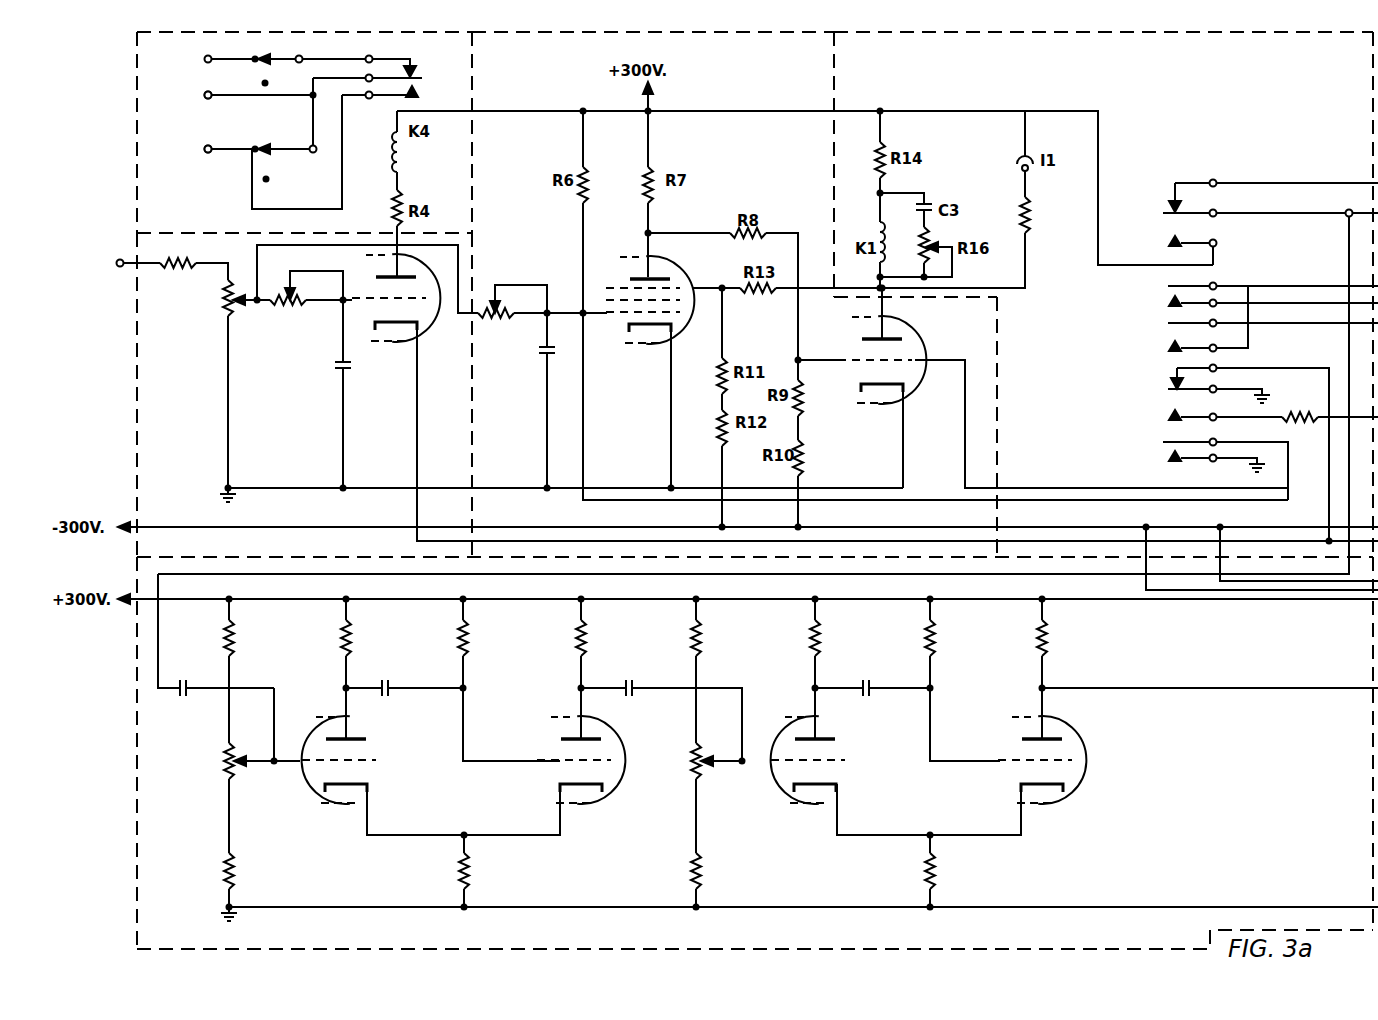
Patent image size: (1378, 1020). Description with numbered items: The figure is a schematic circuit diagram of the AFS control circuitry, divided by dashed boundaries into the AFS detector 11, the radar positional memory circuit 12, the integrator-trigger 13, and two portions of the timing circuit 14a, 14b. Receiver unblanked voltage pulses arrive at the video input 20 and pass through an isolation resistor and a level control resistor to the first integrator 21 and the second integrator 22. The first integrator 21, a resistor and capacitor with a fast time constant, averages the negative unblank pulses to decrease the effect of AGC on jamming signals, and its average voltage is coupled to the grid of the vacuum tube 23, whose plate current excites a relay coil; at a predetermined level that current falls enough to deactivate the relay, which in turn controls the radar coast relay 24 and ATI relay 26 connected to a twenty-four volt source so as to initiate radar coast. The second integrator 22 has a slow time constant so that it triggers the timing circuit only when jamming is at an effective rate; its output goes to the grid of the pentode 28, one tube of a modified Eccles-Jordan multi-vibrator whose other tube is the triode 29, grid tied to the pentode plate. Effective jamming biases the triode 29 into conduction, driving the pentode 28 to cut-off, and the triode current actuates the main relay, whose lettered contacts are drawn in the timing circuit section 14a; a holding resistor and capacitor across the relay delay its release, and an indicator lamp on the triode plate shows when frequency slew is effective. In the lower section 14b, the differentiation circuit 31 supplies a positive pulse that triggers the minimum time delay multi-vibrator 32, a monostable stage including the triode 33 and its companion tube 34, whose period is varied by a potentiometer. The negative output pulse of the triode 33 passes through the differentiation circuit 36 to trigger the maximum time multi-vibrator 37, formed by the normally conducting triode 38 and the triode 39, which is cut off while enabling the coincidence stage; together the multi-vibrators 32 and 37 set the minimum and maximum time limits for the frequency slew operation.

The AFS detector 11 is at (148, 372).
The radar positional memory circuit 12 is at (281, 132).
The integrator-trigger 13 is at (713, 32).
The timing circuit (relay contact portion) 14a is at (1220, 33).
The timing circuit (multi-vibrator portion) 14b is at (148, 805).
The video input 20 is at (119, 258).
The first integrator 21 is at (333, 317).
The second integrator 22 is at (537, 320).
The vacuum tube 23 is at (383, 288).
The radar coast relay 24 is at (205, 143).
The ATI relay 26 is at (202, 100).
The pentode 28 is at (618, 273).
The triode 29 is at (868, 351).
The differentiation circuit 31 is at (223, 700).
The minimum time delay multi-vibrator 32 is at (444, 757).
The triode 33 is at (305, 782).
The flip-flop tube 34 is at (618, 787).
The differentiation circuit 36 is at (685, 697).
The maximum time multi-vibrator 37 is at (911, 758).
The triode 38 is at (780, 787).
The triode 39 is at (1075, 788).